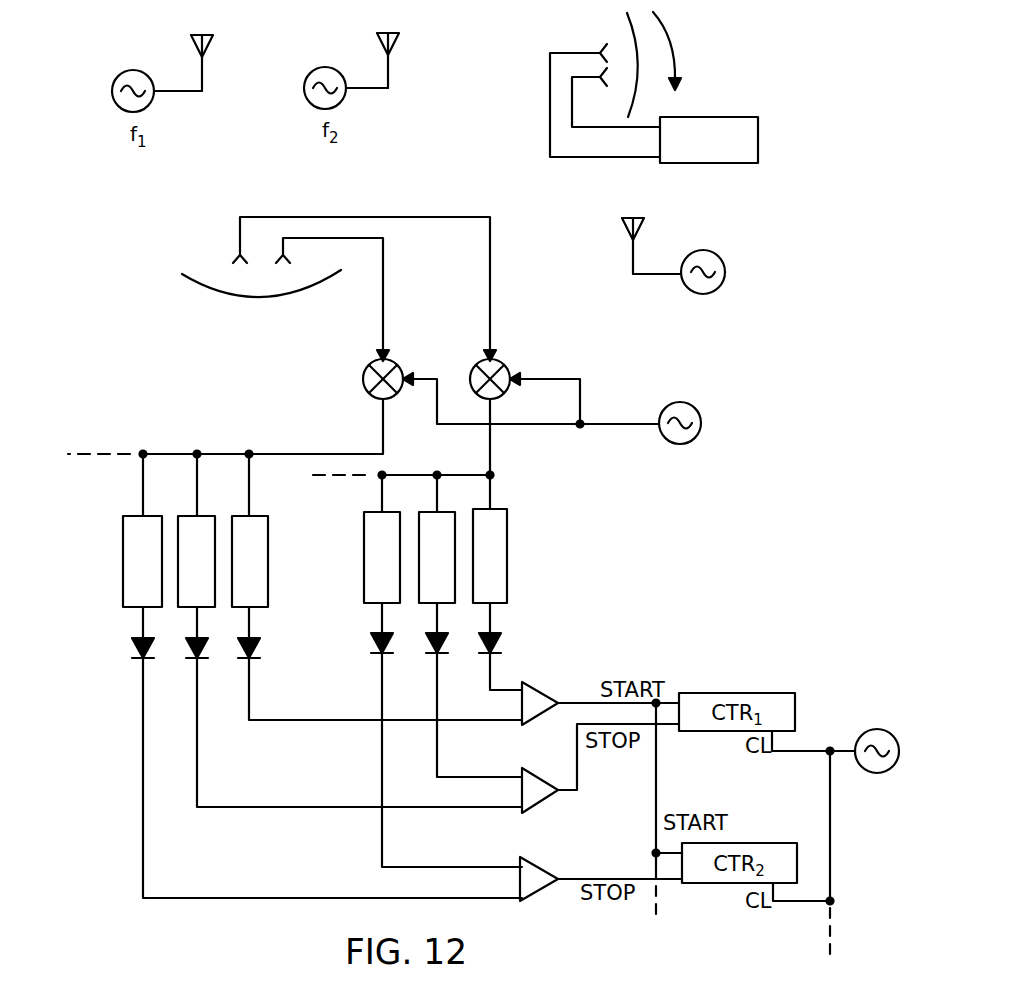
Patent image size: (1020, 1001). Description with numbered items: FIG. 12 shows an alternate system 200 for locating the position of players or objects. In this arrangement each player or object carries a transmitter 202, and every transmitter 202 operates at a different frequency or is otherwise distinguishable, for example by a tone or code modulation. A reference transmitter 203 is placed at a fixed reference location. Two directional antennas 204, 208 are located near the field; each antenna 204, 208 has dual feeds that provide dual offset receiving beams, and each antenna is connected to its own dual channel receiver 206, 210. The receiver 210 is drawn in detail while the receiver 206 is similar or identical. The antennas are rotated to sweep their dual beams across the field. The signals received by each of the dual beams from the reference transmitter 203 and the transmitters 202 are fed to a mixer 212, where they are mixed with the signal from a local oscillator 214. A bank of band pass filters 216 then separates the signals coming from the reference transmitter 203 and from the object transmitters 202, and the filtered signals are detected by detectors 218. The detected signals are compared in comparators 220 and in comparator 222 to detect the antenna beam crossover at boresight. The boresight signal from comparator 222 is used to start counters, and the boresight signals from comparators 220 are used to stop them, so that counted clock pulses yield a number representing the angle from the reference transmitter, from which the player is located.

The alternate system 200 is at (757, 589).
The transmitter 202 is at (118, 112).
The reference transmitter 203 is at (703, 250).
The directional antenna 204 is at (650, 102).
The dual channel receiver 206 is at (765, 136).
The directional antenna 208 is at (195, 295).
The dual channel receiver 210 is at (152, 432).
The mixer 212 is at (362, 383).
The local oscillator 214 is at (701, 424).
The band pass filters 216 is at (123, 542).
The detectors 218 is at (134, 651).
The comparators 220 is at (543, 803).
The comparator 222 is at (540, 690).